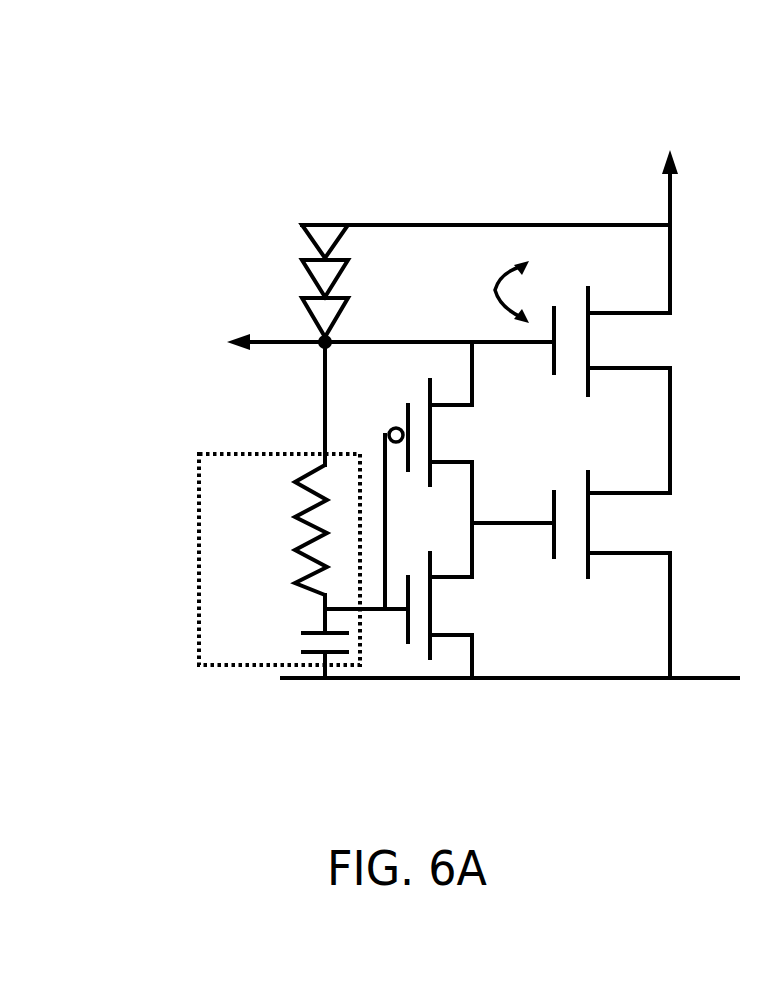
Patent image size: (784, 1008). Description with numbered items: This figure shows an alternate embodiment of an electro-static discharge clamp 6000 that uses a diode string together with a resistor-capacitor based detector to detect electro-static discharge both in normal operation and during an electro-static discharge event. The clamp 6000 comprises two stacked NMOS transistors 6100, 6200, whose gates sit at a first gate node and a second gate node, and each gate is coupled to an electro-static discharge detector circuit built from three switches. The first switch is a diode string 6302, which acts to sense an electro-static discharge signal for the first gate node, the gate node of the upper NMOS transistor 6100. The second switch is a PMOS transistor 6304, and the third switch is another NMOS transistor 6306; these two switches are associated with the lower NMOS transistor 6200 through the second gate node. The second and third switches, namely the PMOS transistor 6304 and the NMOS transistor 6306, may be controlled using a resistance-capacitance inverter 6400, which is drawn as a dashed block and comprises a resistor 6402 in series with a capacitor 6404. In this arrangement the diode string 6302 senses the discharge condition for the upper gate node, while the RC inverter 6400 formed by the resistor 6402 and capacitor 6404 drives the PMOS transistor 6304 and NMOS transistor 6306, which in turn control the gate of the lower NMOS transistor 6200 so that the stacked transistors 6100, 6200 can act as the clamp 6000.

The electro-static discharge clamp 6000 is at (697, 103).
The NMOS transistor 6100 is at (634, 341).
The NMOS transistor 6200 is at (634, 524).
The diode string 6302 is at (354, 283).
The PMOS transistor 6304 is at (441, 432).
The NMOS transistor 6306 is at (451, 605).
The resistance-capacitance (RC) inverter 6400 is at (241, 566).
The resistor 6402 is at (277, 530).
The capacitor 6404 is at (289, 636).